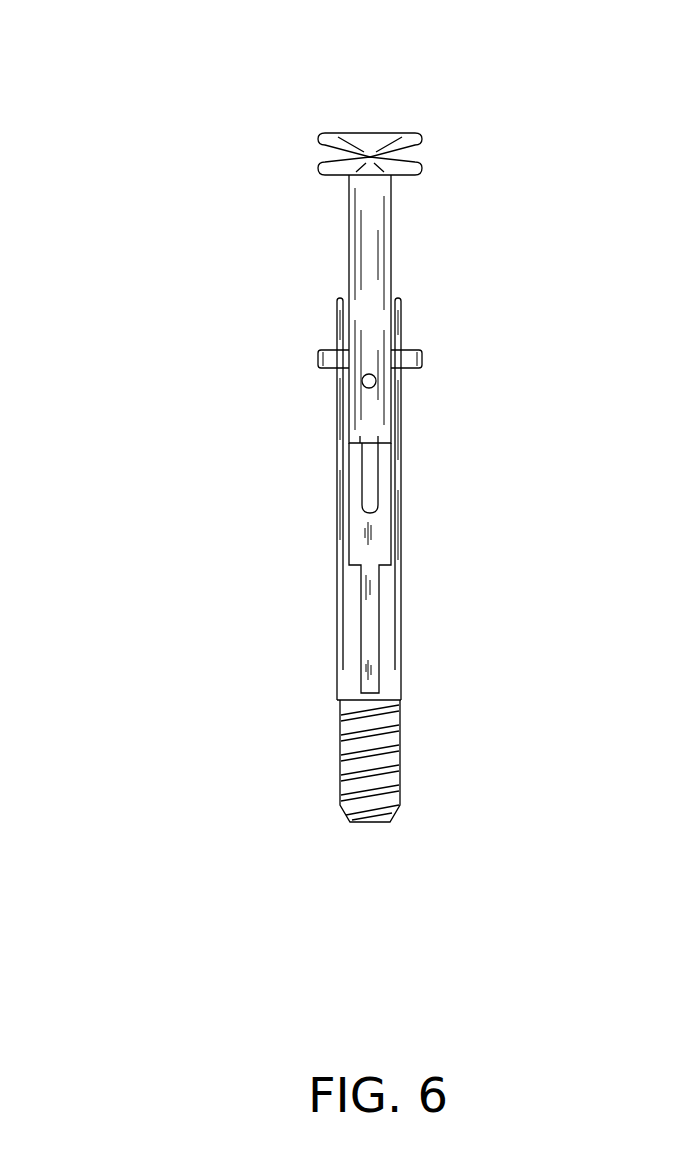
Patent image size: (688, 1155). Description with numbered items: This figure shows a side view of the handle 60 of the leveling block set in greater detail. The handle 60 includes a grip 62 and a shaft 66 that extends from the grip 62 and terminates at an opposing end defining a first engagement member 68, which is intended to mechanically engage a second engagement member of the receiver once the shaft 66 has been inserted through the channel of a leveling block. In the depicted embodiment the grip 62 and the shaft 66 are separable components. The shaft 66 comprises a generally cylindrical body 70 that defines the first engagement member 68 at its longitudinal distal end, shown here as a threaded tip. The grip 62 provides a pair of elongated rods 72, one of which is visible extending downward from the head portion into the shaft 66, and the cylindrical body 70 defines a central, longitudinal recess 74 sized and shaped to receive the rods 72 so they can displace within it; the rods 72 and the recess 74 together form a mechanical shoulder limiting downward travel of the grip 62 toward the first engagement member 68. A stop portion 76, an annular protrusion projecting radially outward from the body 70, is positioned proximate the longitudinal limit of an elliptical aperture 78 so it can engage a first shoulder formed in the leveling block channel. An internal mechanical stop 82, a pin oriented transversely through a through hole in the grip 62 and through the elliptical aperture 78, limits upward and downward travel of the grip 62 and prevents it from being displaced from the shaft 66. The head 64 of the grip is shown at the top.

The handle 60 is at (110, 105).
The grip 62 is at (425, 172).
The driver engagement portion of head 64 is at (322, 134).
The shaft 66 is at (412, 610).
The first engagement member 68 is at (340, 800).
The cylindrical body 70 is at (402, 658).
The elongated rod 72 is at (373, 250).
The central longitudinal recess 74 is at (382, 552).
The stop portion 76 is at (318, 355).
The elliptical aperture 78 is at (372, 500).
The internal mechanical stop 82 is at (363, 387).